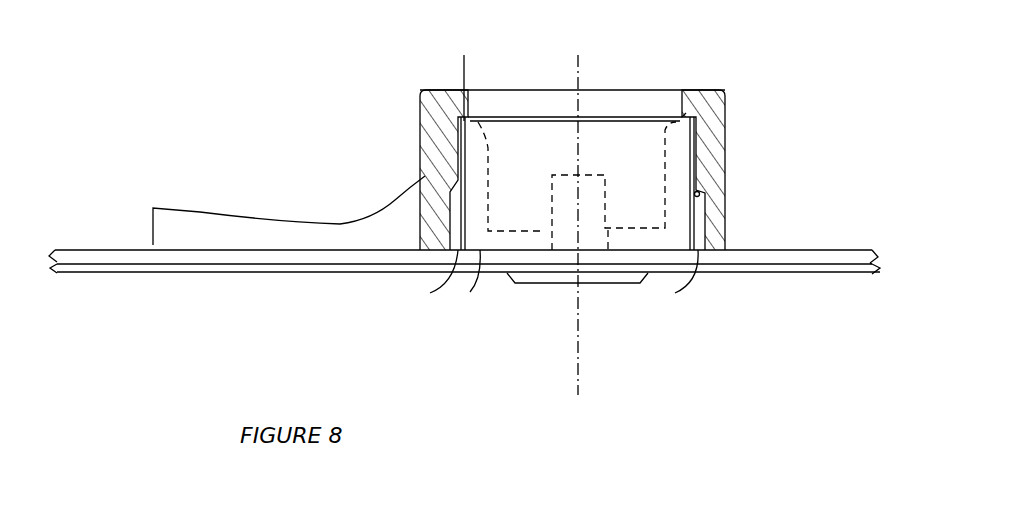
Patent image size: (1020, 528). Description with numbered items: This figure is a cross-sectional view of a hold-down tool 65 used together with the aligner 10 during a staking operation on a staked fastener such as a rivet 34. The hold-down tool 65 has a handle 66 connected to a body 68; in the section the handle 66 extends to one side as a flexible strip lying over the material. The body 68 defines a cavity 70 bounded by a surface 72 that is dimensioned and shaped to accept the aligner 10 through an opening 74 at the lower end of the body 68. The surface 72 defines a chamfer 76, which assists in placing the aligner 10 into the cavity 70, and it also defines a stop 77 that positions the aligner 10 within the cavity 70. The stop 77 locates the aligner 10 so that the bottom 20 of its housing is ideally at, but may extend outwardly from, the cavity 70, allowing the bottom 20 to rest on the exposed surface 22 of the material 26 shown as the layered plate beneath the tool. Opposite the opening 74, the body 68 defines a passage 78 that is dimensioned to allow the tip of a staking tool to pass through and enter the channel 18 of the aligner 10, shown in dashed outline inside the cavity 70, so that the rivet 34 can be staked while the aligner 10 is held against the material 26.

The hold-down tool 65 is at (384, 82).
The stop 77 is at (464, 55).
The passage 78 is at (614, 100).
The body 68 is at (720, 121).
The chamfer 76 is at (452, 178).
The channel 18 is at (524, 154).
The aligner 10 is at (700, 193).
The surface 72 is at (712, 220).
The handle 66 is at (188, 228).
The exposed surface 22 is at (776, 246).
The material 26 is at (830, 258).
The cavity 70 is at (435, 284).
The bottom 20 is at (467, 284).
The rivet 34 is at (538, 293).
The opening 74 is at (682, 291).